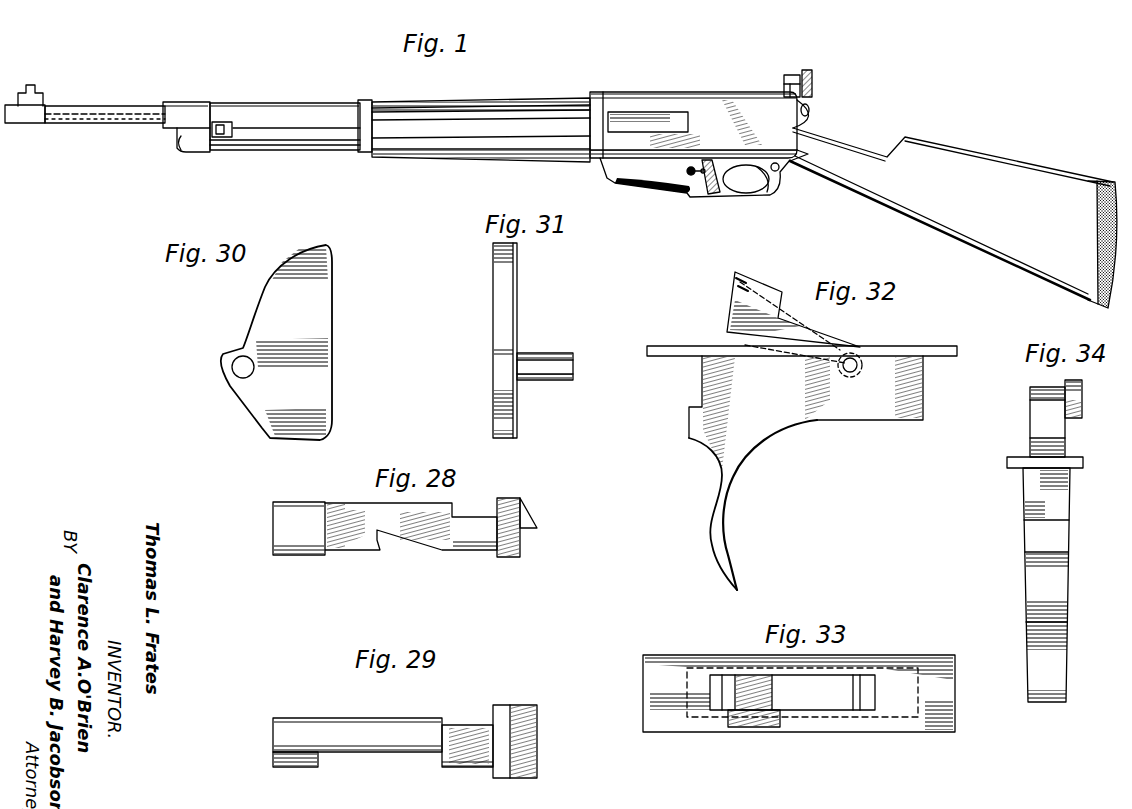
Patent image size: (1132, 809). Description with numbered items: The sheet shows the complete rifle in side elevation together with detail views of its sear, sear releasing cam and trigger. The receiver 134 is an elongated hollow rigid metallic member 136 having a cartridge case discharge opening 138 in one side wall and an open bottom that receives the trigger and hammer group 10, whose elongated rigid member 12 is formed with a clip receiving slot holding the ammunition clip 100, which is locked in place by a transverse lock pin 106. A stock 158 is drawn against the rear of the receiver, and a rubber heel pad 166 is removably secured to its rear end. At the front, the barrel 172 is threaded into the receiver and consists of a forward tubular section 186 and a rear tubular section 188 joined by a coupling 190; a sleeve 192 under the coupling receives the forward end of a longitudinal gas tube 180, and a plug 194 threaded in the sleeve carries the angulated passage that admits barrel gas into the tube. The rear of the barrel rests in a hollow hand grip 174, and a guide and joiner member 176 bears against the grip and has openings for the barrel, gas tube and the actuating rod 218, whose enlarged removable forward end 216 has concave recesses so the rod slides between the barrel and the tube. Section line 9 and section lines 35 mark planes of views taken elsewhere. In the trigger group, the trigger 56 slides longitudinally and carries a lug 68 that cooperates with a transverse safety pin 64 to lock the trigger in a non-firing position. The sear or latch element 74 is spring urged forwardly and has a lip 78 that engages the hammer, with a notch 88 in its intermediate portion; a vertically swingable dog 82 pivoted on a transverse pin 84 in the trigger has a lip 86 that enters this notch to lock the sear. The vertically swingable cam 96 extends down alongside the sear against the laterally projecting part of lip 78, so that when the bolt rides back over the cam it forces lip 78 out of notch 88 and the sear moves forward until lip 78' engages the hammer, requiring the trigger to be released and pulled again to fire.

In FIG. 1, the section line 9 is at (141, 150).
In FIG. 1, the trigger and hammer group 10 is at (277, 180).
In FIG. 1, the elongated rigid member 12 is at (700, 198).
In FIG. 1, the section line 35 is at (679, 170).
In FIG. 1, the trigger 56 is at (762, 190).
In FIG. 32, the trigger 56 is at (889, 408).
In FIG. 33, the trigger 56 is at (928, 715).
In FIG. 34, the trigger 56 is at (1065, 500).
In FIG. 1, the transverse safety pin 64 is at (778, 171).
In FIG. 32, the lug 68 is at (697, 420).
In FIG. 28, the latch element or sear 74 is at (346, 502).
In FIG. 29, the latch element or sear 74 is at (356, 725).
In FIG. 32, the lip 78 is at (715, 287).
In FIG. 33, the lip 78 is at (751, 722).
In FIG. 34, the lip 78 is at (1092, 396).
In FIG. 28, the lip 78' is at (532, 532).
In FIG. 29, the lip 78' is at (532, 740).
In FIG. 32, the vertically swingable dog 82 is at (790, 332).
In FIG. 33, the vertically swingable dog 82 is at (826, 702).
In FIG. 34, the vertically swingable dog 82 is at (1036, 446).
In FIG. 32, the transverse pin 84 is at (856, 372).
In FIG. 32, the lip 86 is at (770, 300).
In FIG. 34, the lip 86 is at (1050, 388).
In FIG. 28, the notch 88 is at (377, 540).
In FIG. 30, the cam 96 is at (325, 330).
In FIG. 31, the cam 96 is at (505, 313).
In FIG. 1, the ammunition clip 100 is at (612, 190).
In FIG. 1, the transverse lock pin 106 is at (682, 190).
In FIG. 1, the receiver 134 is at (640, 92).
In FIG. 1, the elongated hollow rigid metallic member 136 is at (712, 103).
In FIG. 1, the cartridge case discharge opening 138 is at (612, 124).
In FIG. 1, the stock 158 is at (950, 152).
In FIG. 1, the rubber heel pad 166 is at (1105, 178).
In FIG. 1, the barrel 172 is at (352, 70).
In FIG. 1, the hollow hand grip 174 is at (428, 150).
In FIG. 1, the guide and joiner member 176 is at (362, 154).
In FIG. 1, the longitudinal gas tube 180 is at (310, 147).
In FIG. 1, the forward tubular section 186 is at (93, 122).
In FIG. 1, the rear tubular section 188 is at (470, 99).
In FIG. 1, the coupling 190 is at (180, 103).
In FIG. 1, the sleeve 192 is at (197, 153).
In FIG. 1, the plug 194 is at (179, 145).
In FIG. 1, the enlarged removable forward end 216 is at (226, 138).
In FIG. 1, the actuating rod 218 is at (248, 128).